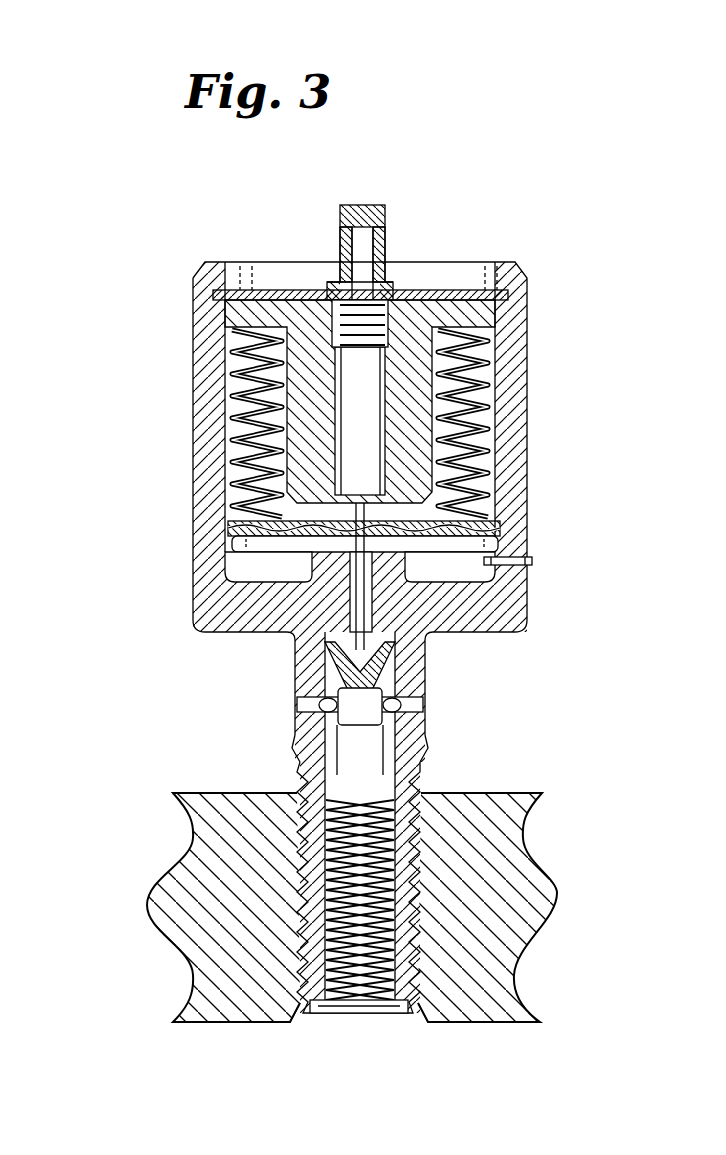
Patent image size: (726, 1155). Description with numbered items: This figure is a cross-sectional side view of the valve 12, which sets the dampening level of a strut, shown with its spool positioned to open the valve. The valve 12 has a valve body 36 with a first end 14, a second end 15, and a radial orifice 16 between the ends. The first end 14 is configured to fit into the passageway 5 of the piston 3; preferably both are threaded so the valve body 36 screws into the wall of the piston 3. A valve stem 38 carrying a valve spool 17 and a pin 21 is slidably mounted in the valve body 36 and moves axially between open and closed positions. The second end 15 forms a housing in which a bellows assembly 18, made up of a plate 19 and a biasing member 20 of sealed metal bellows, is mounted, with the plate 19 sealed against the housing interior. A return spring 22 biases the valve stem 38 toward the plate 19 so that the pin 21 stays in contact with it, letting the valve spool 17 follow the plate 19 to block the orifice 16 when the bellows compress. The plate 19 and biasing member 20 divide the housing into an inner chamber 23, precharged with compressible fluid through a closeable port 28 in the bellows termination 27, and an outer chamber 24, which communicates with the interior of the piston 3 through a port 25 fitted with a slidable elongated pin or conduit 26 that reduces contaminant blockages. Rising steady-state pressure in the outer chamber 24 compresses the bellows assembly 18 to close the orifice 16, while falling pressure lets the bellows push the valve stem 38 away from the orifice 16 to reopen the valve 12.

The piston 3 is at (225, 1022).
The passageway 5 is at (340, 1022).
The valve 12 is at (323, 637).
The first end 14 is at (372, 1015).
The second end 15 is at (528, 299).
The radial orifice 16 is at (425, 705).
The valve spool 17 is at (395, 742).
The bellows assembly 18 is at (418, 450).
The plate 19 is at (232, 583).
The biasing member 20 is at (278, 424).
The pin 21 is at (367, 592).
The return spring 22 is at (448, 1020).
The inner chamber 23 is at (347, 506).
The outer chamber 24 is at (293, 567).
The port 25 is at (512, 540).
The elongated pin or conduit 26 is at (533, 562).
The bellows termination 27 is at (430, 290).
The closeable port 28 is at (384, 222).
The valve body 36 is at (298, 636).
The valve stem 38 is at (388, 668).